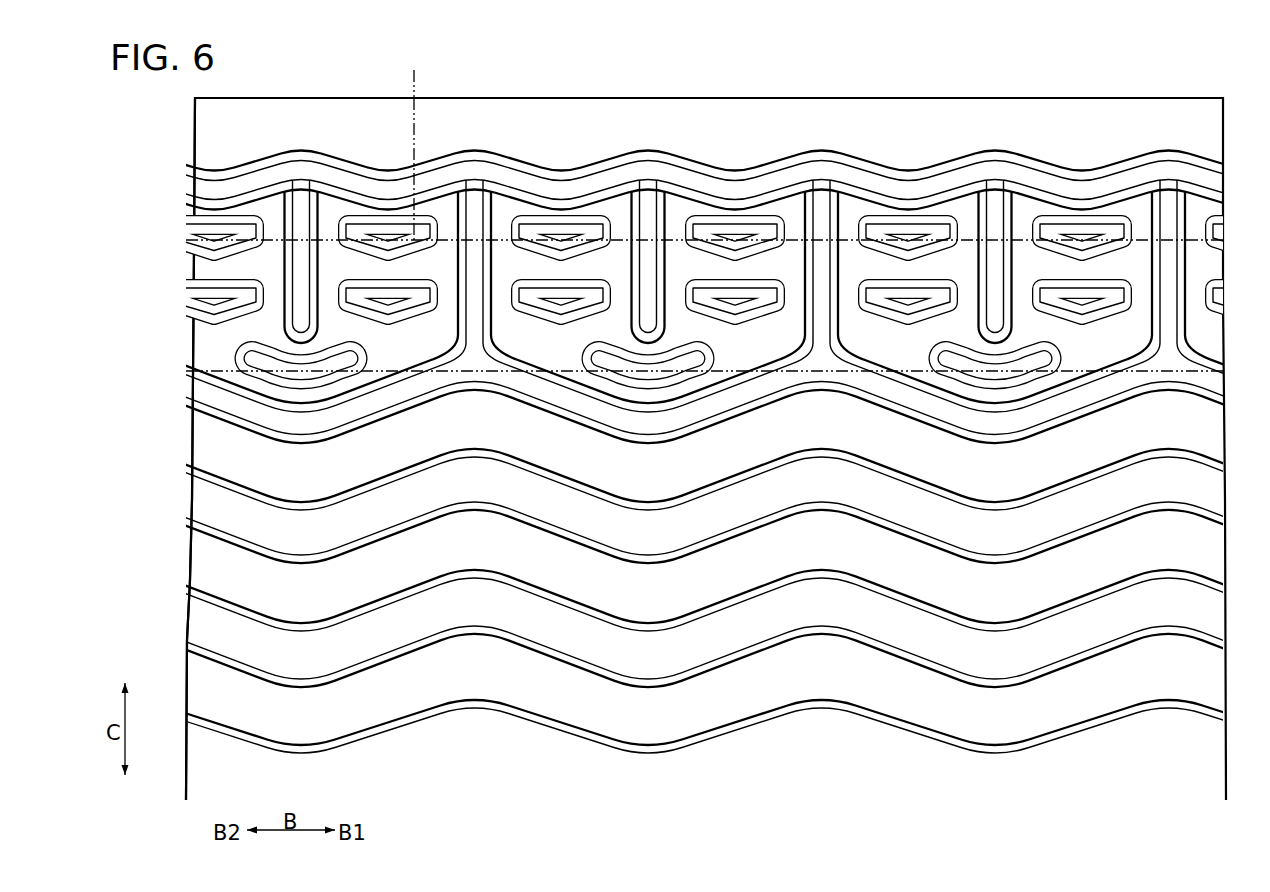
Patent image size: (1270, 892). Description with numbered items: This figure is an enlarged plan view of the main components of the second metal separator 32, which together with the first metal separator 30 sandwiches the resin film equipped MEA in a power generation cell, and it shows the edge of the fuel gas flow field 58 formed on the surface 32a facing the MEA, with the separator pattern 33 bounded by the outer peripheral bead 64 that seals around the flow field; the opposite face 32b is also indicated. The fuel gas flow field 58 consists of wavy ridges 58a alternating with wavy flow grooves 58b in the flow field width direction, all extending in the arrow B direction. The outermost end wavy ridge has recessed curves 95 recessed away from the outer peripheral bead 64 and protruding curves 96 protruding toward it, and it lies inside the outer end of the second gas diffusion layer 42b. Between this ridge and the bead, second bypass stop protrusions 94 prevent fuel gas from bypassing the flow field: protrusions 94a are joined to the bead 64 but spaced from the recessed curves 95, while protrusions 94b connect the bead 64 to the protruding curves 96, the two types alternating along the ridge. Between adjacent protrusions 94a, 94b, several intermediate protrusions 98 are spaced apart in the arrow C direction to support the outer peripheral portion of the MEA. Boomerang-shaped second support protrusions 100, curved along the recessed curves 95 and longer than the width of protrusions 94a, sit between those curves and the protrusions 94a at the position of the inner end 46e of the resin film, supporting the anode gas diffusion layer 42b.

The first metal separator 30 is at (1151, 97).
The second metal separator 32 is at (1112, 97).
The surface 32a is at (913, 117).
The tread surface portion 32b is at (957, 117).
The tread pattern 33 is at (307, 66).
The second gas diffusion layer 42b is at (450, 143).
The inner end 46e is at (796, 374).
The fuel gas flow field 58 is at (920, 633).
The wavy ridge 58a is at (1126, 378).
The wavy flow groove 58b is at (892, 465).
The outer peripheral bead 64 is at (944, 183).
The second bypass stop protrusion 94 is at (735, 227).
The second bypass stop protrusion 94a is at (302, 190).
The second bypass stop protrusion 94b is at (476, 190).
The recessed curve 95 is at (650, 428).
The protruding curve 96 is at (477, 367).
The intermediate protrusion 98 is at (575, 303).
The second support protrusion 100 is at (664, 382).